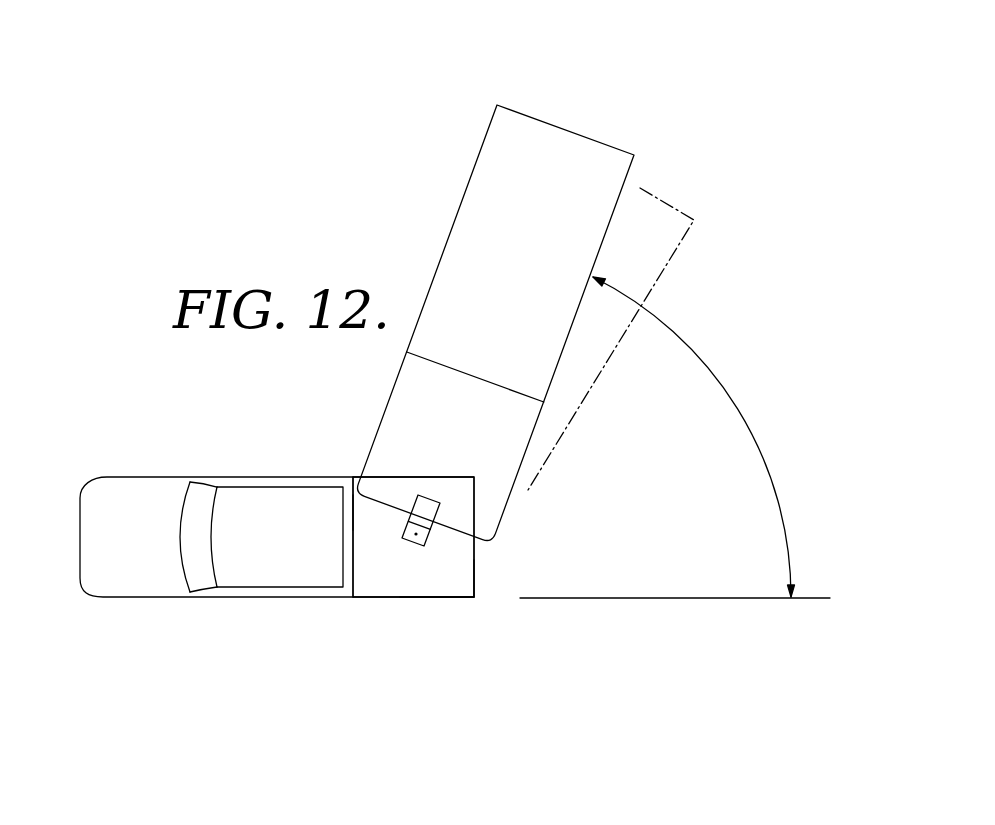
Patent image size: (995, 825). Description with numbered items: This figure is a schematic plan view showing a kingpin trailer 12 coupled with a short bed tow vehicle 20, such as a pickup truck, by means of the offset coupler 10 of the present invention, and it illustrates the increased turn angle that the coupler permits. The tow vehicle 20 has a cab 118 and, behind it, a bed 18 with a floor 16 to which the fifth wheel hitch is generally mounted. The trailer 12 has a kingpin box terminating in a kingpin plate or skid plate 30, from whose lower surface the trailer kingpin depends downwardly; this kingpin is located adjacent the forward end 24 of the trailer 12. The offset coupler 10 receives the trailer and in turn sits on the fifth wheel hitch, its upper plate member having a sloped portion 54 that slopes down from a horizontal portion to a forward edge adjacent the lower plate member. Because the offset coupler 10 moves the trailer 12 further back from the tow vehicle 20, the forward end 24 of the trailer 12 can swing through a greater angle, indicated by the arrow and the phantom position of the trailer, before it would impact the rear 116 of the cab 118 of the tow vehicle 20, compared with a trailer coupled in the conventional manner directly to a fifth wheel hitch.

The offset coupler 10 is at (428, 541).
The trailer 12 is at (477, 200).
The floor 16 is at (470, 588).
The bed 18 is at (428, 600).
The tow vehicle 20 is at (130, 484).
The forward end 24 is at (357, 512).
The skid plate 30 is at (407, 520).
The sloped portion 54 is at (403, 541).
The rear 116 is at (357, 584).
The cab 118 is at (247, 577).